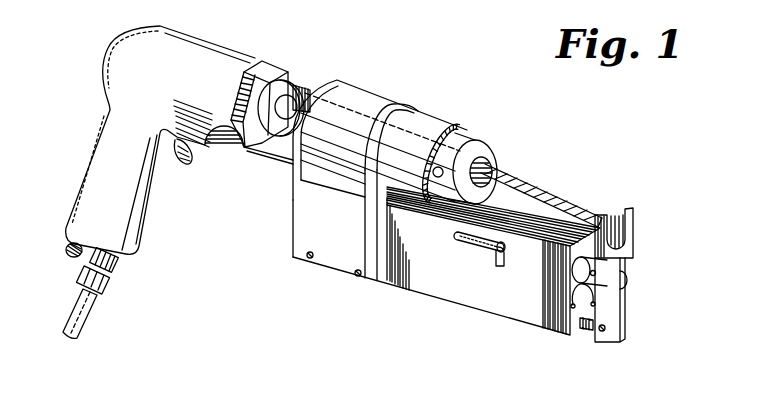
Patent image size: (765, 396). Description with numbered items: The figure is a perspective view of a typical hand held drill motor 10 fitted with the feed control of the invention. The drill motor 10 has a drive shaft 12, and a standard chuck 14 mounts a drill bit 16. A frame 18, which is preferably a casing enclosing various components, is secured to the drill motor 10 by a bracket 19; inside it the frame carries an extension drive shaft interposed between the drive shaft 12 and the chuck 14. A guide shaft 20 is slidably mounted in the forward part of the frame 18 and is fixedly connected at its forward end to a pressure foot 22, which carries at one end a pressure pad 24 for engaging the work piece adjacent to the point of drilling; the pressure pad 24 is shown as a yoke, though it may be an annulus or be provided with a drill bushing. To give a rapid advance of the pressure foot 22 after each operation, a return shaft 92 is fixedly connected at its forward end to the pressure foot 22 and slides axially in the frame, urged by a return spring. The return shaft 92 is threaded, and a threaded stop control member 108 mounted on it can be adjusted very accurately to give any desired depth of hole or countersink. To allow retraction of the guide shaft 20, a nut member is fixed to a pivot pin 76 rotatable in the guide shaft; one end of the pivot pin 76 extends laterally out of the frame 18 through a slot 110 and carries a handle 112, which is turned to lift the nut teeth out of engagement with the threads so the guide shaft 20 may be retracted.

The drill motor 10 is at (218, 42).
The drive shaft 12 is at (287, 97).
The chuck 14 is at (420, 117).
The drill bit 16 is at (520, 180).
The frame 18 is at (320, 273).
The bracket 19 is at (243, 147).
The guide shaft 20 is at (572, 279).
The pressure foot 22 is at (617, 303).
The pressure pad 24 is at (633, 239).
The pivot pin 76 is at (500, 249).
The return shaft 92 is at (580, 326).
The threaded stop control member 108 is at (590, 331).
The slot 110 is at (462, 240).
The handle 112 is at (498, 266).